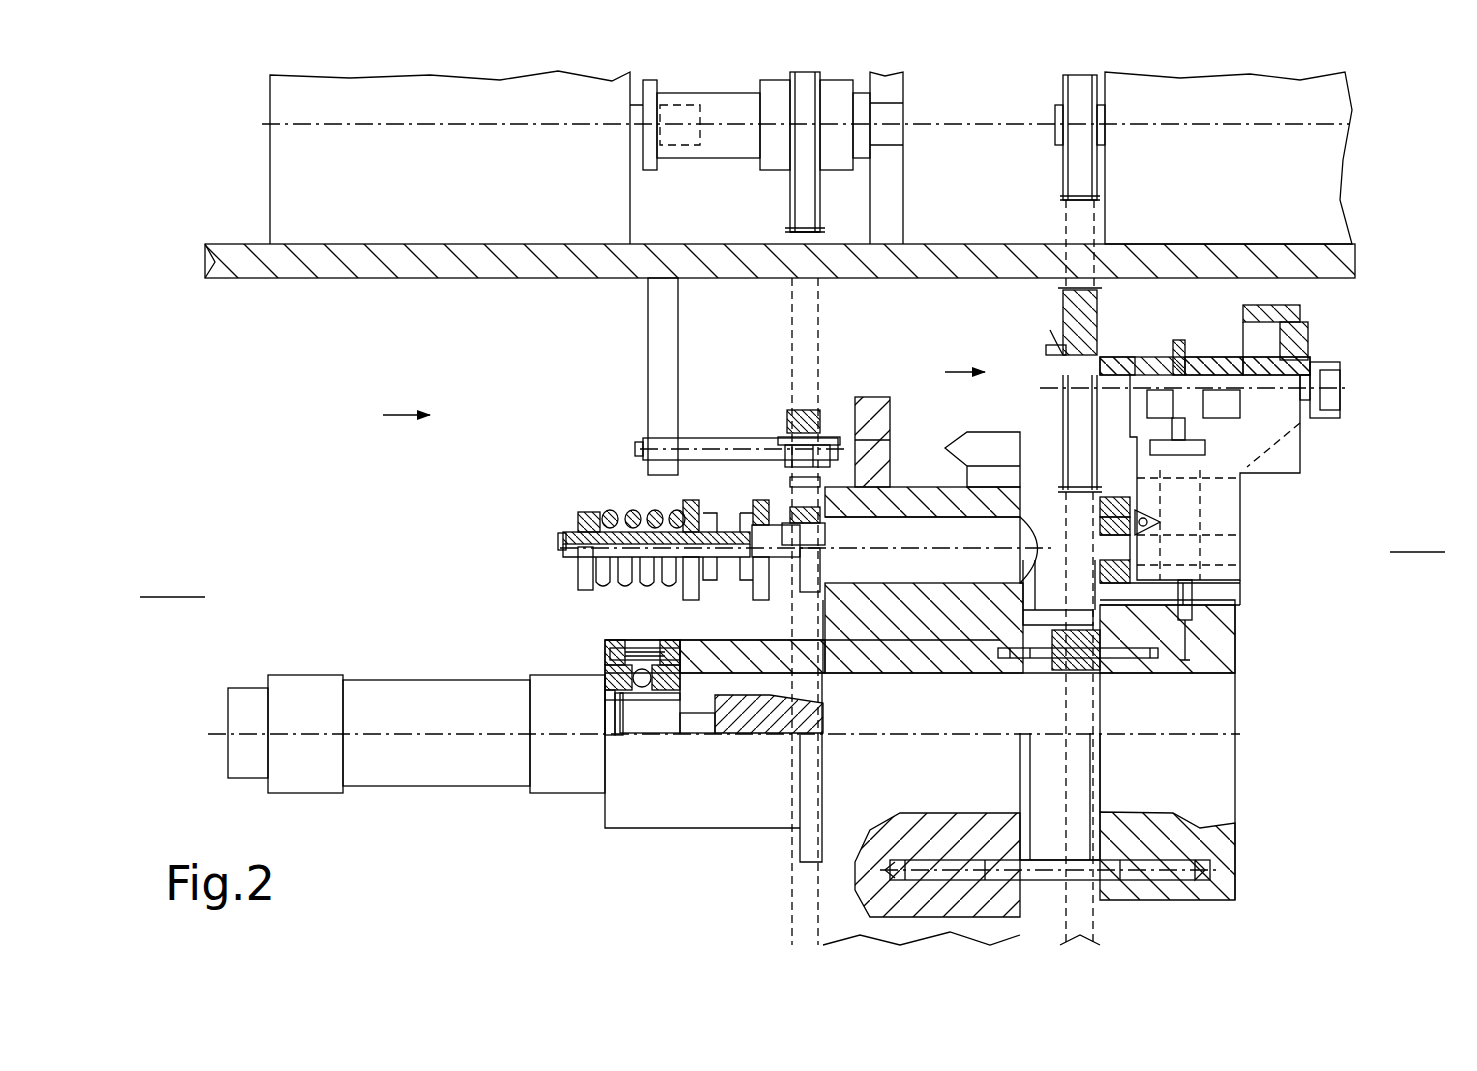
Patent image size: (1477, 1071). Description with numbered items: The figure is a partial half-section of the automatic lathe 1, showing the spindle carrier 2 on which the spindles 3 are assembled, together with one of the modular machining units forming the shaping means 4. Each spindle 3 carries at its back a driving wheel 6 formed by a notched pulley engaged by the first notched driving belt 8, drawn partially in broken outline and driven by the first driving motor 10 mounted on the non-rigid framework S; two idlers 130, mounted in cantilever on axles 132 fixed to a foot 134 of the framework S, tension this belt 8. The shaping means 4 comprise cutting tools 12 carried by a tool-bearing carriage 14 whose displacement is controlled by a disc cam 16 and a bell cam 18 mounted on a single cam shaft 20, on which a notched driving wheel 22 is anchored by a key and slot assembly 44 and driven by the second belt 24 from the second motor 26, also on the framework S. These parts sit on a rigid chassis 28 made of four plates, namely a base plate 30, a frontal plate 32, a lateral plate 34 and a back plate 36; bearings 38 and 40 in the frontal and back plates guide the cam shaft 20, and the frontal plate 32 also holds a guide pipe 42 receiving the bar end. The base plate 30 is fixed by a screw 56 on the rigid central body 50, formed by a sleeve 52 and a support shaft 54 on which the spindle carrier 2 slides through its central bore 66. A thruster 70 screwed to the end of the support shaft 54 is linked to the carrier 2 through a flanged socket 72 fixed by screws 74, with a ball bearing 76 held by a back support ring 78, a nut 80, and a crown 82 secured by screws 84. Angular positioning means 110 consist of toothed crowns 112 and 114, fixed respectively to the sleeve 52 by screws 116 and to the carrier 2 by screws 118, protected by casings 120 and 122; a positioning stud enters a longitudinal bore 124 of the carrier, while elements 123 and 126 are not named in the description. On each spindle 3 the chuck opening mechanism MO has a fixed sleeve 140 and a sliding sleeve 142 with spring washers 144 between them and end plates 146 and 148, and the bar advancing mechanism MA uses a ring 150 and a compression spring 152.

The lathe 1 is at (300, 492).
The spindle carrier 2 is at (847, 867).
The spindle 3 is at (931, 580).
The shaping means 4 is at (1285, 498).
The driving wheel 6 is at (900, 505).
The first notched driving belt 8 is at (798, 300).
The first driving motor 10 is at (327, 167).
The tool 12 is at (1160, 522).
The tool-bearing carriage 14 is at (1210, 545).
The disc cam 16 is at (1207, 360).
The bell cam 18 is at (1270, 307).
The cam shaft 20 is at (1277, 378).
The driving wheel 22 is at (1063, 318).
The notched driving belt 24 is at (1063, 232).
The second motor 26 is at (1310, 155).
The rigid chassis 28 is at (1100, 443).
The base plate 30 is at (1215, 595).
The frontal plate 32 is at (1125, 375).
The lateral plate 34 is at (1245, 360).
The back plate 36 is at (1330, 412).
The bearing 38 is at (1152, 360).
The bearing 40 is at (1320, 400).
The guide pipe 42 is at (1130, 690).
The key and slot assembly 44 is at (1085, 335).
The rigid central body 50 is at (1397, 598).
The sleeve 52 is at (1230, 645).
The support shaft 54 is at (1225, 700).
The screw 56 is at (1185, 665).
The bore 66 is at (870, 640).
The thruster 70 is at (428, 755).
The flanged socket 72 is at (673, 782).
The screw 74 is at (840, 625).
The bearing 76 is at (633, 640).
The back support ring 78 is at (607, 690).
The nut 80 is at (623, 760).
The crown 82 is at (605, 673).
The screw 84 is at (617, 653).
The angular positioning means 110 is at (1133, 748).
The crown 112 is at (1100, 620).
The crown 114 is at (1040, 640).
The screw 116 is at (1130, 660).
The screw 118 is at (1075, 660).
The casing 120 is at (1050, 750).
The casing 122 is at (1007, 600).
The bolt head 123 is at (1160, 873).
The bore 124 is at (1200, 870).
The bolt 126 is at (890, 877).
The idler 130 is at (810, 415).
The axle 132 is at (685, 440).
The foot 134 is at (665, 347).
The fixed sleeve 140 is at (770, 500).
The movable sleeve 142 is at (692, 500).
The spring washers 144 is at (727, 508).
The end plate 146 is at (760, 600).
The end plate 148 is at (692, 600).
The ring 150 is at (580, 513).
The compression spring 152 is at (603, 568).
The non-rigid framework S is at (356, 264).
The bar advancing mechanism MA is at (612, 500).
The chuck opening mechanism MO is at (690, 338).